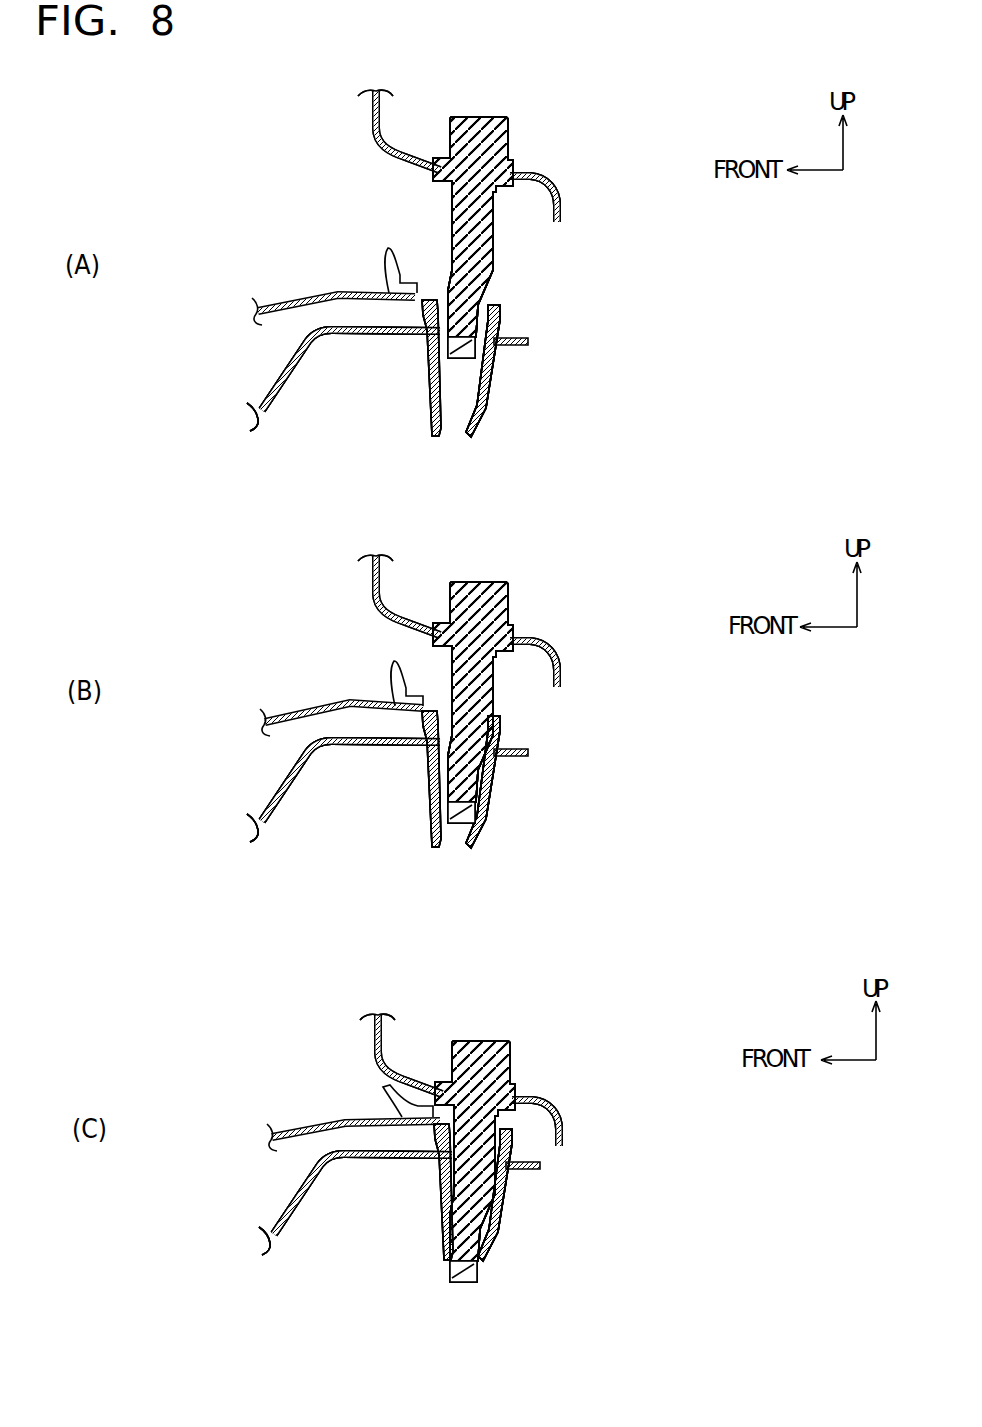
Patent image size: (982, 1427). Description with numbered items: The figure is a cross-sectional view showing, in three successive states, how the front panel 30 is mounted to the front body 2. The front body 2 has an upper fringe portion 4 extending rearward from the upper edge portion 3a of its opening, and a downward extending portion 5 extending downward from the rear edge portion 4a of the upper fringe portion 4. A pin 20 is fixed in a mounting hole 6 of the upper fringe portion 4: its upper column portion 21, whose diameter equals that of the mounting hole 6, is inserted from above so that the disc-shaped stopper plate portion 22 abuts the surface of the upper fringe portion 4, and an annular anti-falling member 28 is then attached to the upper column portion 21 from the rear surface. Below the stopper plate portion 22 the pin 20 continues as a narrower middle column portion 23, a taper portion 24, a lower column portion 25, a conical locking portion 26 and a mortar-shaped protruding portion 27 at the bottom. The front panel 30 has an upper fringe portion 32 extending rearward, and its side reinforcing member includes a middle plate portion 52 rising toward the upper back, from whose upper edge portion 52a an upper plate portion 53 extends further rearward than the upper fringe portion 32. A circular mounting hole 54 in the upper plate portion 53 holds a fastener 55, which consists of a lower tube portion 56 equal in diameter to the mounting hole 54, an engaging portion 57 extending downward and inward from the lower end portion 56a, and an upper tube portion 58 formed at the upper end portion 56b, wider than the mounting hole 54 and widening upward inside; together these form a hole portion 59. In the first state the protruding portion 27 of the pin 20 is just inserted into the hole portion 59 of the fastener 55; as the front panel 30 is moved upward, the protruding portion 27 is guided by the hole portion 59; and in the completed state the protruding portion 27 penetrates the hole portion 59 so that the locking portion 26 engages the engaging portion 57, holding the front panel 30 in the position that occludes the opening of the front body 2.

The front body 2 is at (359, 113).
The upper edge portion 3a is at (373, 150).
The upper fringe portion 4 is at (533, 176).
The rear edge portion 4a is at (553, 187).
The downward extending portion 5 is at (561, 210).
The mounting hole 6 is at (448, 152).
The pin 20 is at (474, 106).
The upper column portion 21 is at (497, 120).
The stopper plate portion 22 is at (510, 194).
The middle column portion 23 is at (483, 218).
The taper portion 24 is at (467, 313).
The lower column portion 25 is at (440, 331).
The locking portion 26 is at (443, 300).
The protruding portion 27 is at (465, 355).
The anti-falling member 28 is at (510, 158).
The front panel 30 is at (279, 292).
The upper fringe portion 32 is at (365, 296).
The middle plate portion 52 is at (280, 388).
The upper edge portion 52a is at (323, 338).
The upper plate portion 53 is at (400, 338).
The mounting hole 54 is at (433, 360).
The fastener 55 is at (467, 449).
The lower tube portion 56 is at (489, 383).
The lower end portion 56a is at (484, 413).
The upper end portion 56b is at (492, 355).
The engaging portion 57 is at (476, 437).
The upper tube portion 58 is at (528, 342).
The hole portion 59 is at (497, 303).